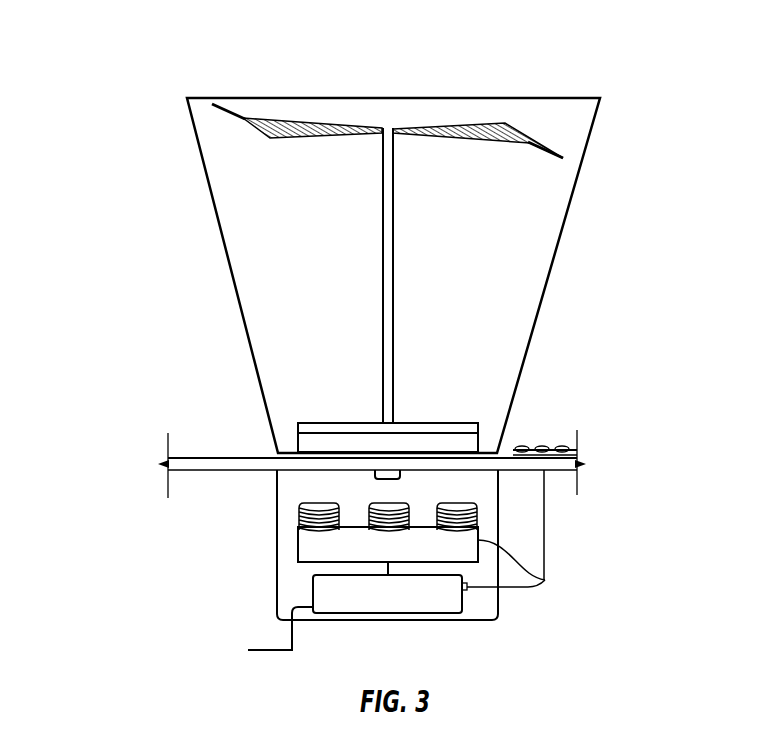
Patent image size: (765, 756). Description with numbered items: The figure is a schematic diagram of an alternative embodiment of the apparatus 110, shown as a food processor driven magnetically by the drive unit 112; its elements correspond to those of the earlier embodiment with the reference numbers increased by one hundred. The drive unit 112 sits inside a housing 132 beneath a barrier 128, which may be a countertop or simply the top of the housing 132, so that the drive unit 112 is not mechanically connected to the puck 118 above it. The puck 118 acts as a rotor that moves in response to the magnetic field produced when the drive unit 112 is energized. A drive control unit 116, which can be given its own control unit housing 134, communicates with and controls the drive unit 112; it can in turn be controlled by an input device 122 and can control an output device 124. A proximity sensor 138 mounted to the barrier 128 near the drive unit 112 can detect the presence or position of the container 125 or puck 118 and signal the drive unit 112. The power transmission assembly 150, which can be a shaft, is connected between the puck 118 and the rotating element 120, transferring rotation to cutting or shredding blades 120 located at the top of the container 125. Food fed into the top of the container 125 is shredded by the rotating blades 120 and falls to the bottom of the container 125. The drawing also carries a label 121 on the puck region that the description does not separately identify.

The apparatus 110 is at (548, 62).
The drive unit 112 is at (545, 580).
The drive control unit 116 is at (305, 630).
The puck 118 is at (391, 420).
The rotating element 120 is at (468, 142).
The motor mount 121 is at (342, 423).
The input device 122 is at (601, 424).
The output device 124 is at (555, 450).
The container 125 is at (572, 207).
The barrier 128 is at (240, 457).
The housing 132 is at (277, 540).
The control unit housing 134 is at (420, 615).
The proximity sensor 138 is at (385, 479).
The power transmission assembly 150 is at (393, 298).